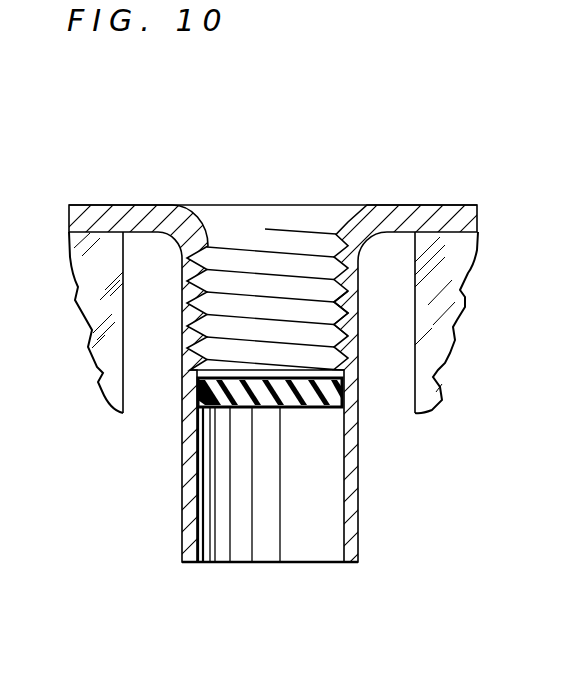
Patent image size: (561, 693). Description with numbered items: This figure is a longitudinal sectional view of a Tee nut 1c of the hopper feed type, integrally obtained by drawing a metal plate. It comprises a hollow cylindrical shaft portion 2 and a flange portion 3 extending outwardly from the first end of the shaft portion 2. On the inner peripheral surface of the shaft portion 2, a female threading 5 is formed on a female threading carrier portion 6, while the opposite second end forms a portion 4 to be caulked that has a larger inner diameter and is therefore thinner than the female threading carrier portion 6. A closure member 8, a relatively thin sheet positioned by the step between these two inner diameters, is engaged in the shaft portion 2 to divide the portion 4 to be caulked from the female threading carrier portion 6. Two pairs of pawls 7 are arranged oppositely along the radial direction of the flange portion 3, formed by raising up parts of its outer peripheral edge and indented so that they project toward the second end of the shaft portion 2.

The Tee nut 1c is at (345, 138).
The shaft portion 2 is at (182, 481).
The flange portion 3 is at (145, 213).
The portion to be caulked 4 is at (352, 523).
The female threading 5 is at (263, 252).
The female threading carrier portion 6 is at (354, 323).
The pawls 7 is at (100, 372).
The closure member 8 is at (282, 407).